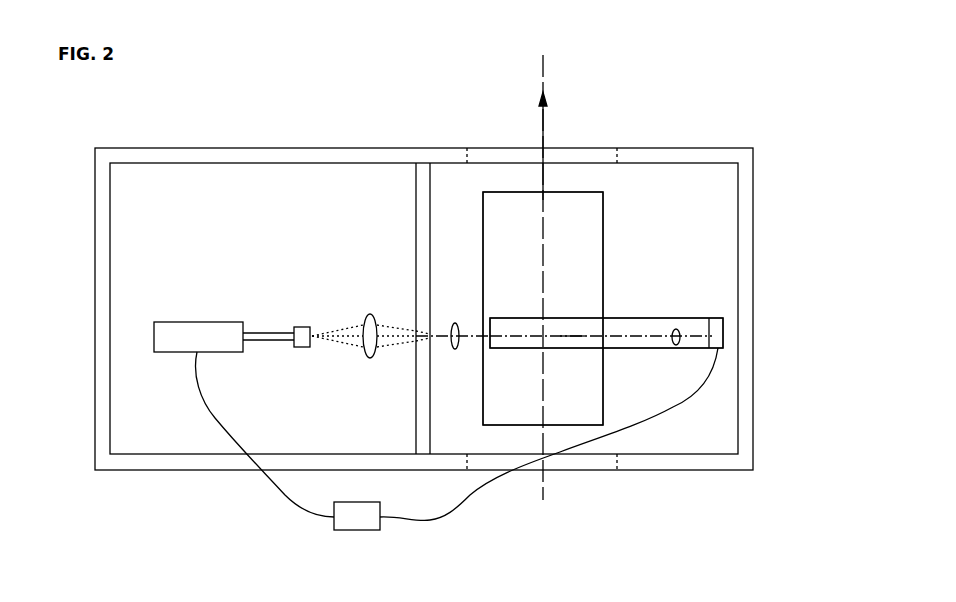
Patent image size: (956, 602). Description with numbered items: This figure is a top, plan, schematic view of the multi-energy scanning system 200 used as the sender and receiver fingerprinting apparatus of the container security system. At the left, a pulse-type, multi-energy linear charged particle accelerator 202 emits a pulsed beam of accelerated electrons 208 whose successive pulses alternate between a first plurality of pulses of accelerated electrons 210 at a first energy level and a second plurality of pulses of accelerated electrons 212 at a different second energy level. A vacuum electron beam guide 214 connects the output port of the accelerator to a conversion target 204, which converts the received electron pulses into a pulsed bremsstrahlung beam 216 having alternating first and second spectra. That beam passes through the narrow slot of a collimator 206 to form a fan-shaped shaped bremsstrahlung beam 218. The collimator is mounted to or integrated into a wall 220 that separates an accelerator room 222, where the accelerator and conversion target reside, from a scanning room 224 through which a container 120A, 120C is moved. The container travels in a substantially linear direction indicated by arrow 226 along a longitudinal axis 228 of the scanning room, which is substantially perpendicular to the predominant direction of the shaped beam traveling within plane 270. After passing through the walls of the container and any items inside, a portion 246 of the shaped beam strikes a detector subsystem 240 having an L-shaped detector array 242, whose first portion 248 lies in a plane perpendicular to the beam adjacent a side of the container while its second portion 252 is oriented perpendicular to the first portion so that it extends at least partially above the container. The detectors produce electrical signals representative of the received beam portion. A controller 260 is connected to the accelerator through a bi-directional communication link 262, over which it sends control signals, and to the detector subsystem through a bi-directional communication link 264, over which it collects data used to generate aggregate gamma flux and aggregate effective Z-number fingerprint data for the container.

The multi-energy scanning system 200 is at (270, 63).
The charged particle accelerator 202 is at (186, 317).
The conversion target 204 is at (246, 277).
The collimator 206 is at (325, 227).
The pulsed beam of accelerated electrons 208 is at (310, 363).
The first plurality of pulses of accelerated electrons 210 is at (372, 367).
The second plurality of pulses of accelerated electrons 212 is at (402, 384).
The vacuum electron beam guide 214 is at (227, 292).
The pulsed bremsstrahlung beam 216 is at (311, 270).
The shaped bremsstrahlung beam 218 is at (457, 350).
The wall 220 is at (366, 280).
The accelerator room 222 is at (404, 325).
The scanning room 224 is at (451, 326).
The arrow 226 is at (588, 146).
The longitudinal axis 228 is at (590, 283).
The container 120A is at (622, 266).
The container 120C is at (543, 308).
The detector subsystem 240 is at (656, 278).
The detector array 242 is at (653, 289).
The portion of the shaped bremsstrahlung beam 246 is at (675, 345).
The first portion of the detector array 248 is at (760, 340).
The second portion of the detector array 252 is at (607, 272).
The controller 260 is at (321, 536).
The bi-directional communication link 262 is at (262, 434).
The bi-directional communication link 264 is at (549, 454).
The plane 270 is at (609, 356).